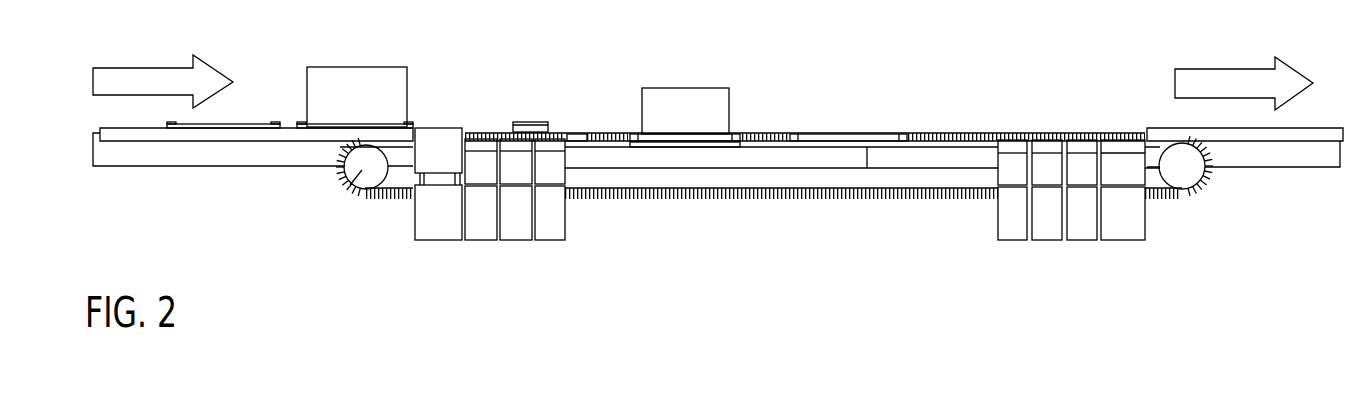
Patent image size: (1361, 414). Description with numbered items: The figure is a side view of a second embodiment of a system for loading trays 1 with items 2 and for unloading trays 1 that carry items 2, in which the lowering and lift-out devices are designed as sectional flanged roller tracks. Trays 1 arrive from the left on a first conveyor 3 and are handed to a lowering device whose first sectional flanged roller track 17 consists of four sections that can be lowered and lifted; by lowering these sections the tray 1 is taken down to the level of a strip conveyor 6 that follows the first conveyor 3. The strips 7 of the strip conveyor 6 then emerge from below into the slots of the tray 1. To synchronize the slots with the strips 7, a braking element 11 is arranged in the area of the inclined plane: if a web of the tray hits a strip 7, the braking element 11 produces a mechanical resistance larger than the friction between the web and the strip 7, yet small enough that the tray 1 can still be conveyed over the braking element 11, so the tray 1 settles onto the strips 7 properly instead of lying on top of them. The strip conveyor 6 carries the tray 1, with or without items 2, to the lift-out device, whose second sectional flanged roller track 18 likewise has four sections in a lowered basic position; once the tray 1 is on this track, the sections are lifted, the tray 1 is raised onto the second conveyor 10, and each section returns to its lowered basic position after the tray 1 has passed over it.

The tray 1 is at (252, 125).
The items 2 is at (362, 67).
The first conveyor 3 is at (123, 137).
The strip conveyor 6 is at (350, 185).
The strips 7 is at (862, 200).
The second conveyor 10 is at (1283, 135).
The braking element 11 is at (518, 121).
The first sectional flanged roller track 17 is at (430, 240).
The second sectional flanged roller track 18 is at (1083, 256).